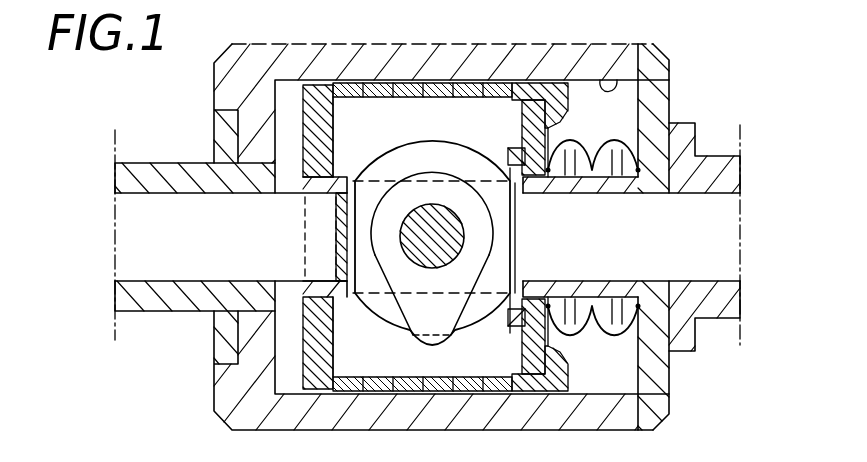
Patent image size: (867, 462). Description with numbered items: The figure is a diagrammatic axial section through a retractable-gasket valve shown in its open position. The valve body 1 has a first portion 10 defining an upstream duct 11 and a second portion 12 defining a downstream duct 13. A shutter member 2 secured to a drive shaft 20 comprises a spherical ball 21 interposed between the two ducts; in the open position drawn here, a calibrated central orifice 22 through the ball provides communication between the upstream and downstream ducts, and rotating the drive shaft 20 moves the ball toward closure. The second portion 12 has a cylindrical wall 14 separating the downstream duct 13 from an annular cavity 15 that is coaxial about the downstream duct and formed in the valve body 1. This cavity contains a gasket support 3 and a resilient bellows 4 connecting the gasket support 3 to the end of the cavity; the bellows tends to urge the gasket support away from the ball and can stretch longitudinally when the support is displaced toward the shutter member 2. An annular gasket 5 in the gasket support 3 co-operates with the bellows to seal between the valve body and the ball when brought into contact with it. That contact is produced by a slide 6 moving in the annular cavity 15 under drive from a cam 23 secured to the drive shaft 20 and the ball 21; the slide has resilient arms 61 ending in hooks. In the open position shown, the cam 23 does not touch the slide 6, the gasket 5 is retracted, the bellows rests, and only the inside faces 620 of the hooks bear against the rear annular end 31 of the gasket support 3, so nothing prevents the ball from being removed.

The valve body 1 is at (198, 94).
The first portion 10 is at (220, 137).
The upstream duct 11 is at (143, 193).
The second portion 12 is at (715, 157).
The downstream duct 13 is at (697, 196).
The cylindrical wall 14 is at (578, 180).
The annular cavity 15 is at (600, 80).
The shutter member 2 is at (423, 130).
The drive shaft 20 is at (435, 212).
The spherical ball 21 is at (387, 170).
The calibrated central orifice 22 is at (506, 290).
The cam 23 is at (377, 243).
The gasket support 3 is at (524, 352).
The rear annular end 31 is at (548, 132).
The resilient bellows 4 is at (613, 333).
The annular gasket 5 is at (512, 152).
The slide 6 is at (294, 169).
The resilient arms 61 is at (433, 95).
The inside faces 620 is at (562, 86).